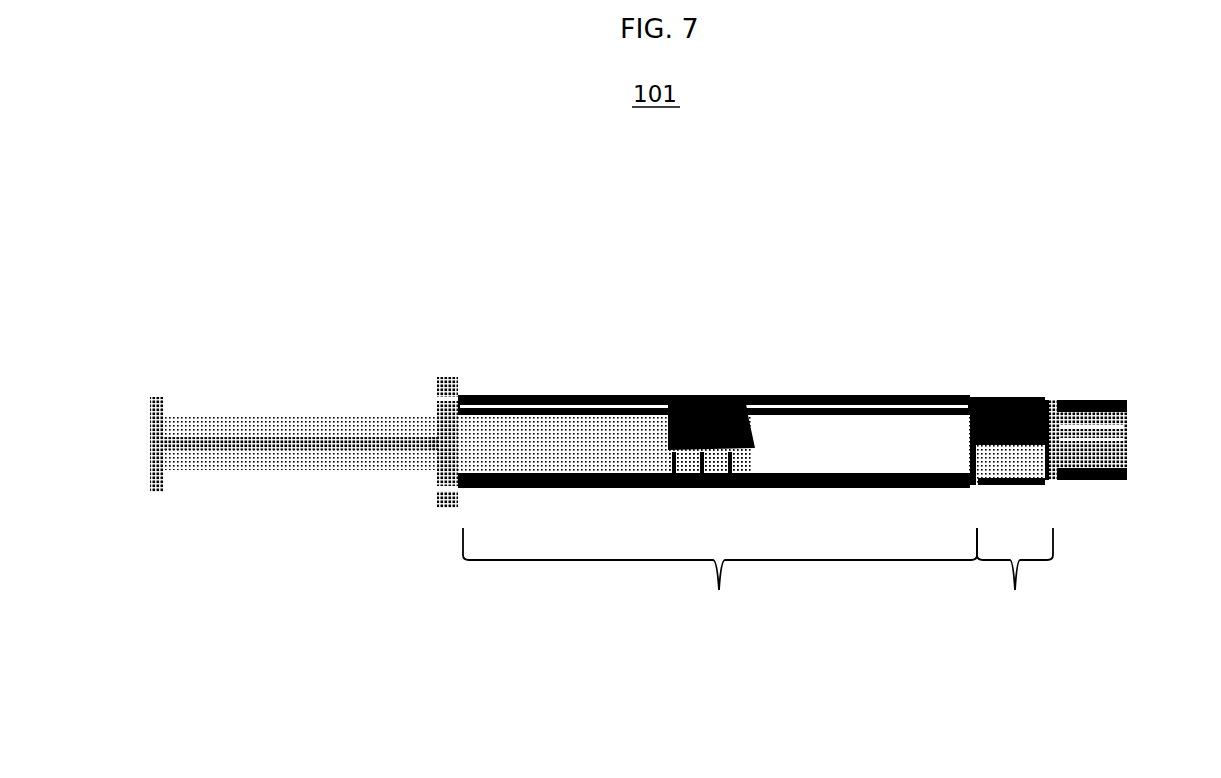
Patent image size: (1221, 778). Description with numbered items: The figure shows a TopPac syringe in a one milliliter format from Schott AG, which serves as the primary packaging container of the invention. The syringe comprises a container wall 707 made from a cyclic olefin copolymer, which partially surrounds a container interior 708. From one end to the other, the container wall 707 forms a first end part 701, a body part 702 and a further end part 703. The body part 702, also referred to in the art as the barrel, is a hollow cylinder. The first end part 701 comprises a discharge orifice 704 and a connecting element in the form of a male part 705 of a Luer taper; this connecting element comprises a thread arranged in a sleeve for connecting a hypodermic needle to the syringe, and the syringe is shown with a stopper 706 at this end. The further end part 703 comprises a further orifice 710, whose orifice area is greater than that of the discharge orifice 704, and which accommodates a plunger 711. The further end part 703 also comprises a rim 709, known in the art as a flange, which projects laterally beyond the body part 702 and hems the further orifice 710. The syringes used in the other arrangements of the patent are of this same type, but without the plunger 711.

The first end part 701 is at (1015, 585).
The body part 702 is at (717, 519).
The further end part 703 is at (443, 516).
The discharge orifice 704 is at (1047, 402).
The male part of Luer taper 705 is at (1012, 405).
The stopper 706 is at (1113, 400).
The container wall 707 is at (757, 397).
The container interior 708 is at (812, 427).
The rim 709 is at (444, 378).
The further orifice 710 is at (437, 444).
The plunger 711 is at (274, 416).